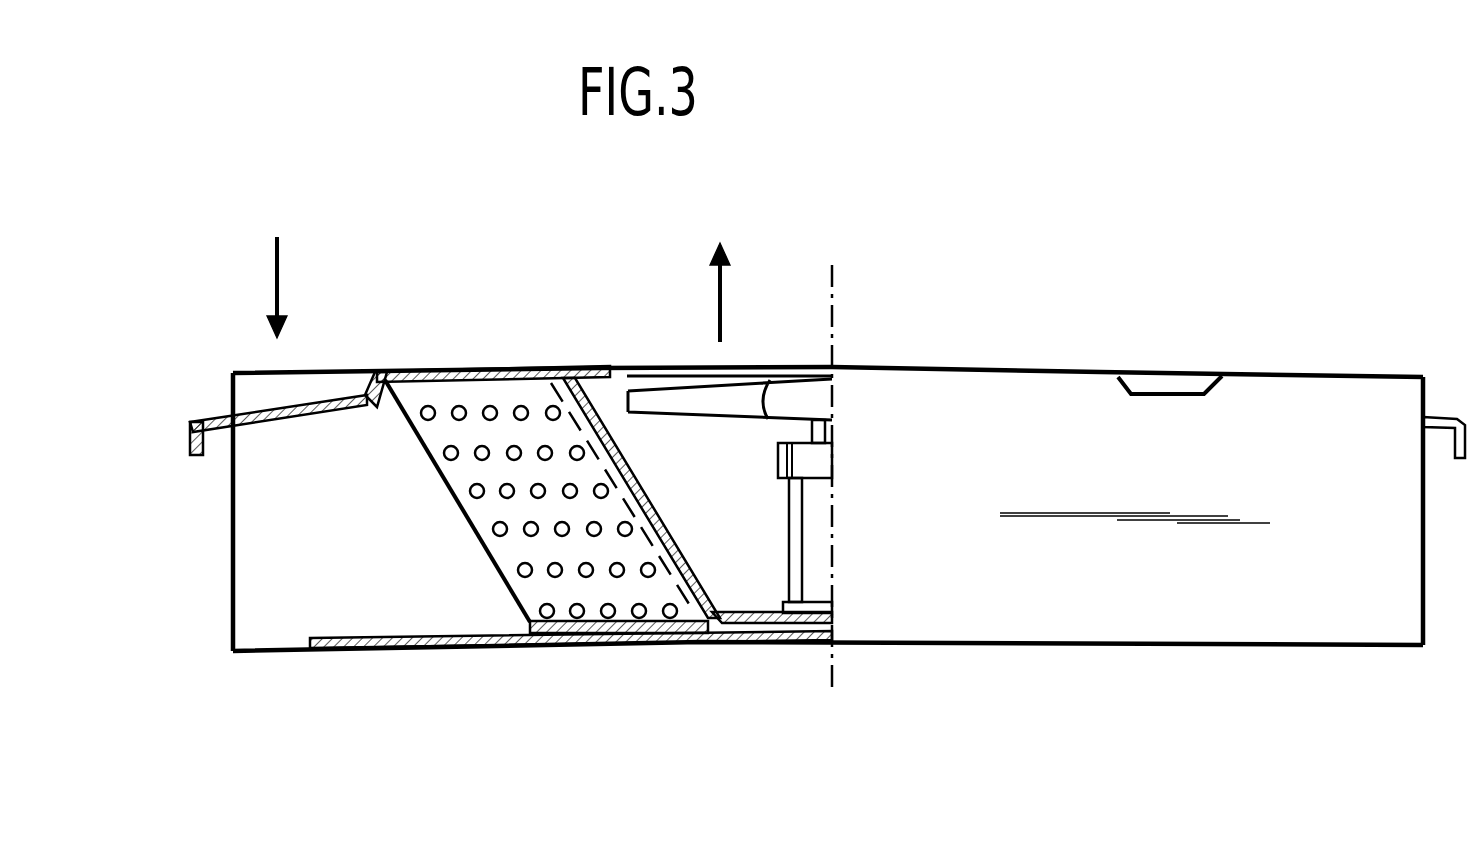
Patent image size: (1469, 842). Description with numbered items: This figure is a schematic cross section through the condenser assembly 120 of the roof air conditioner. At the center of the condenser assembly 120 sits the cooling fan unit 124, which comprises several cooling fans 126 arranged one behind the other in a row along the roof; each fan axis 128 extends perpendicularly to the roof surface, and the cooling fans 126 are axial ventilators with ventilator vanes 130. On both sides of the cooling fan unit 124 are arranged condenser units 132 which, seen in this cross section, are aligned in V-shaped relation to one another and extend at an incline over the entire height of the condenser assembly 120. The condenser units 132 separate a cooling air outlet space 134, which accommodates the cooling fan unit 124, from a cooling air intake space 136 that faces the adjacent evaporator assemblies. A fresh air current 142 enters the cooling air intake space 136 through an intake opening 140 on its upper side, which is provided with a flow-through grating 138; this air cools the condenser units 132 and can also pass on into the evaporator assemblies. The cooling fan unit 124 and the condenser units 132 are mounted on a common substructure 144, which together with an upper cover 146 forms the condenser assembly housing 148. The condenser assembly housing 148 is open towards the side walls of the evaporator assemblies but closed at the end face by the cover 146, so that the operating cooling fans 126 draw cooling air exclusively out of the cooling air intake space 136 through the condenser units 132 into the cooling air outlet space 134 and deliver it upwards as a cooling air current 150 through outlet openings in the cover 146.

The condenser assembly 120 is at (453, 668).
The cooling fan unit 124 is at (668, 350).
The cooling fan 126 is at (618, 348).
The fan axis 128 is at (833, 302).
The ventilator vane 130 is at (723, 403).
The condenser unit 132 is at (507, 423).
The cooling air outlet space 134 is at (766, 570).
The cooling air intake space 136 is at (375, 562).
The flow-through grating 138 is at (252, 412).
The intake opening 140 is at (327, 383).
The fresh air current 142 is at (280, 263).
The substructure 144 is at (528, 668).
The upper cover 146 is at (445, 370).
The condenser assembly housing 148 is at (950, 356).
The cooling air current 150 is at (722, 310).